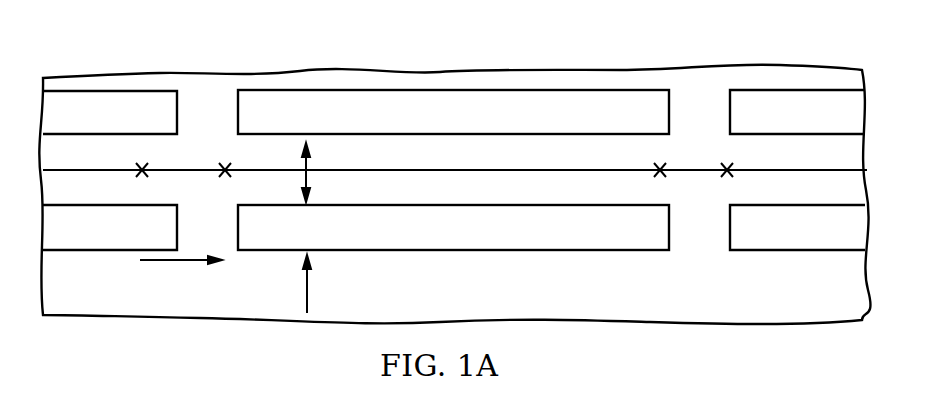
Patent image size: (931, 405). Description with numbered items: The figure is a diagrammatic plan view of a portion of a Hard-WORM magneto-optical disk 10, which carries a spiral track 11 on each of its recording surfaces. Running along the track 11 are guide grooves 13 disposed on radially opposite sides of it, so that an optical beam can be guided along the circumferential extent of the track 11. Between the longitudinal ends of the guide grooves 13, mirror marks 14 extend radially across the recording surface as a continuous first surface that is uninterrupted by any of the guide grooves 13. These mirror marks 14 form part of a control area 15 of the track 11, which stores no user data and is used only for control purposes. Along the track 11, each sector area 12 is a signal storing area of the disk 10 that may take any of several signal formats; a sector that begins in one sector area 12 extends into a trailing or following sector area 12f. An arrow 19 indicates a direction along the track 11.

The magneto-optical disk 10 is at (436, 72).
The spiral track 11 is at (308, 173).
The sector area 12 is at (505, 166).
The following sector area 12f is at (758, 167).
The guide grooves 13 is at (115, 125).
The mirror marks 14 is at (198, 97).
The control area 15 is at (175, 165).
The rotation direction arrow 19 is at (166, 262).